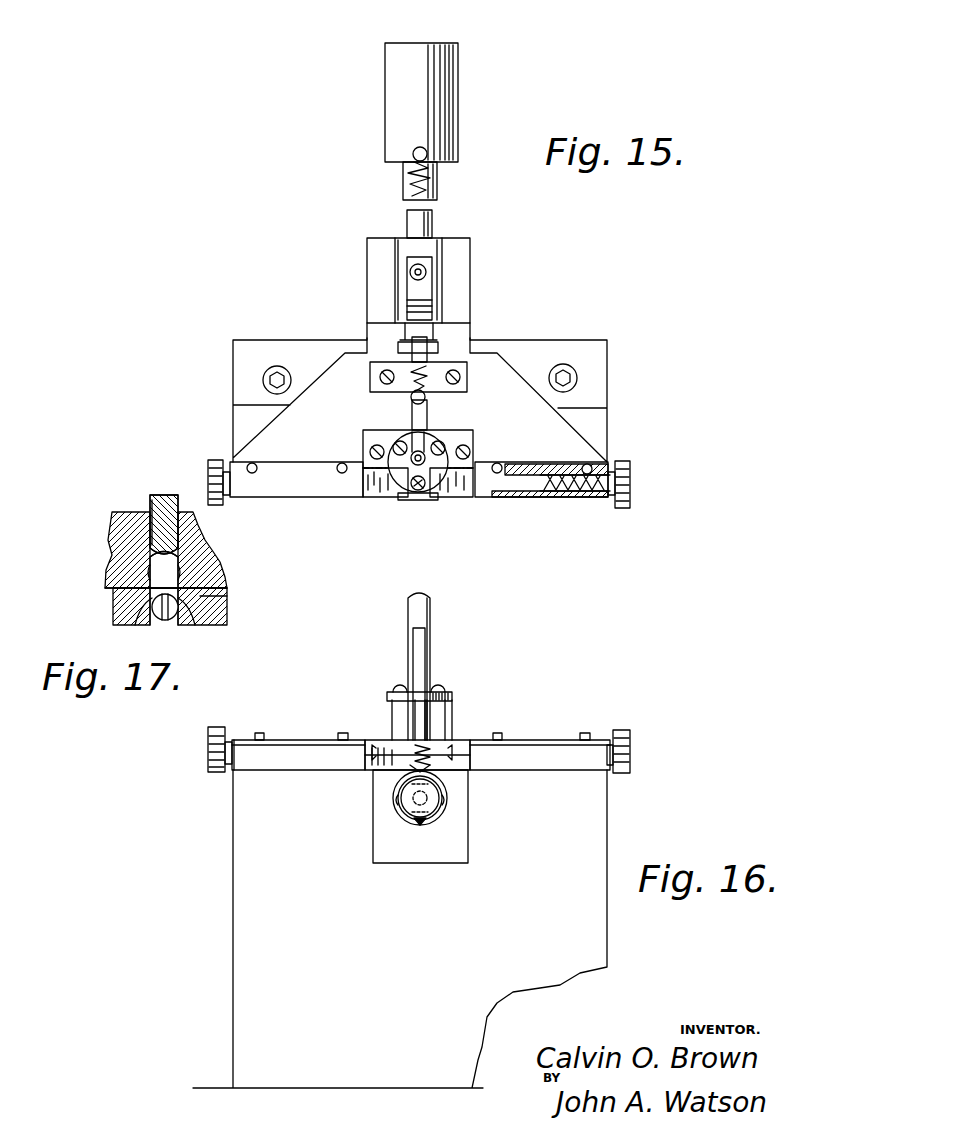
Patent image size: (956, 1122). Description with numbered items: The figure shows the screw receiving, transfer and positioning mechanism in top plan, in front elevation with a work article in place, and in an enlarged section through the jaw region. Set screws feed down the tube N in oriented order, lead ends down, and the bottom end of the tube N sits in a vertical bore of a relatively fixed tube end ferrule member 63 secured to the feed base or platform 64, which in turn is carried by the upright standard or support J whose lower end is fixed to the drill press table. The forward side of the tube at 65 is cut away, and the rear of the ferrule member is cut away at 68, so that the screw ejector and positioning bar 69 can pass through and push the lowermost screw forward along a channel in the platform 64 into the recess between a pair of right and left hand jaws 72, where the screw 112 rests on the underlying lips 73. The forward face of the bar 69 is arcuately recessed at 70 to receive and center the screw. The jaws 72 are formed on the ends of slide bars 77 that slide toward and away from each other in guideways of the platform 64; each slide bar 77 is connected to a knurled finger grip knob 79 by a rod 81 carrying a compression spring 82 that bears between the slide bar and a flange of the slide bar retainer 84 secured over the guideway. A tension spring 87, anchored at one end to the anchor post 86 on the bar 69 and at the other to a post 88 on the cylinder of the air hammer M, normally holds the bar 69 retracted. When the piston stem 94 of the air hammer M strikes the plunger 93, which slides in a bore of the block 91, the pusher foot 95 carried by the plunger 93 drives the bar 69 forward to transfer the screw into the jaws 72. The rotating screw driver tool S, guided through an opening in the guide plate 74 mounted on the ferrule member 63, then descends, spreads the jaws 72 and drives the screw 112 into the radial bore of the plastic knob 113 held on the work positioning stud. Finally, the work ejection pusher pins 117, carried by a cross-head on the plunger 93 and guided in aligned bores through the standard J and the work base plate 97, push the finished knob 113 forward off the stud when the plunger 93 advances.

In FIG. 15, the air hammer M is at (385, 93).
In FIG. 15, the post 88 is at (427, 152).
In FIG. 15, the tension spring 87 is at (432, 178).
In FIG. 15, the stem 94 is at (440, 192).
In FIG. 15, the plunger 93 is at (434, 224).
In FIG. 15, the pusher foot 95 is at (432, 280).
In FIG. 15, the block 91 is at (472, 287).
In FIG. 15, the feed base or platform 64 is at (508, 357).
In FIG. 16, the feed base or platform 64 is at (290, 760).
In FIG. 15, the anchor post 86 is at (426, 405).
In FIG. 15, the screw ejector and positioning bar 69 is at (411, 415).
In FIG. 17, the screw ejector and positioning bar 69 is at (170, 534).
In FIG. 15, the cut away portion of ferrule member 68 is at (424, 444).
In FIG. 15, the tube end ferrule member 63 is at (440, 440).
In FIG. 17, the tube end ferrule member 63 is at (107, 557).
In FIG. 16, the tube end ferrule member 63 is at (453, 717).
In FIG. 15, the guide plate 74 is at (462, 441).
In FIG. 16, the guide plate 74 is at (454, 695).
In FIG. 15, the feed tube N is at (363, 442).
In FIG. 17, the feed tube N is at (112, 542).
In FIG. 16, the feed tube N is at (431, 594).
In FIG. 15, the slide bar retainer 84 is at (312, 473).
In FIG. 16, the slide bar retainer 84 is at (302, 740).
In FIG. 15, the slide bars 77 is at (385, 498).
In FIG. 17, the slide bars 77 is at (112, 603).
In FIG. 16, the slide bars 77 is at (356, 788).
In FIG. 15, the screw driver tool S is at (417, 490).
In FIG. 16, the screw driver tool S is at (421, 640).
In FIG. 15, the plastic knob 113 is at (434, 503).
In FIG. 16, the plastic knob 113 is at (413, 825).
In FIG. 15, the compression spring 82 is at (562, 494).
In FIG. 15, the rod 81 is at (592, 494).
In FIG. 15, the knurled finger grip knob 79 is at (624, 510).
In FIG. 16, the knurled finger grip knob 79 is at (206, 774).
In FIG. 17, the arcuate recess 70 is at (150, 505).
In FIG. 17, the lips 73 is at (150, 580).
In FIG. 17, the cut away forward side of feed tube 65 is at (218, 595).
In FIG. 17, the jaws 72 is at (133, 626).
In FIG. 17, the set screw 112 is at (167, 628).
In FIG. 16, the set screw 112 is at (413, 745).
In FIG. 16, the upright standard or support J is at (610, 815).
In FIG. 16, the work base plate 97 is at (452, 857).
In FIG. 16, the work ejection pusher pins 117 is at (397, 812).